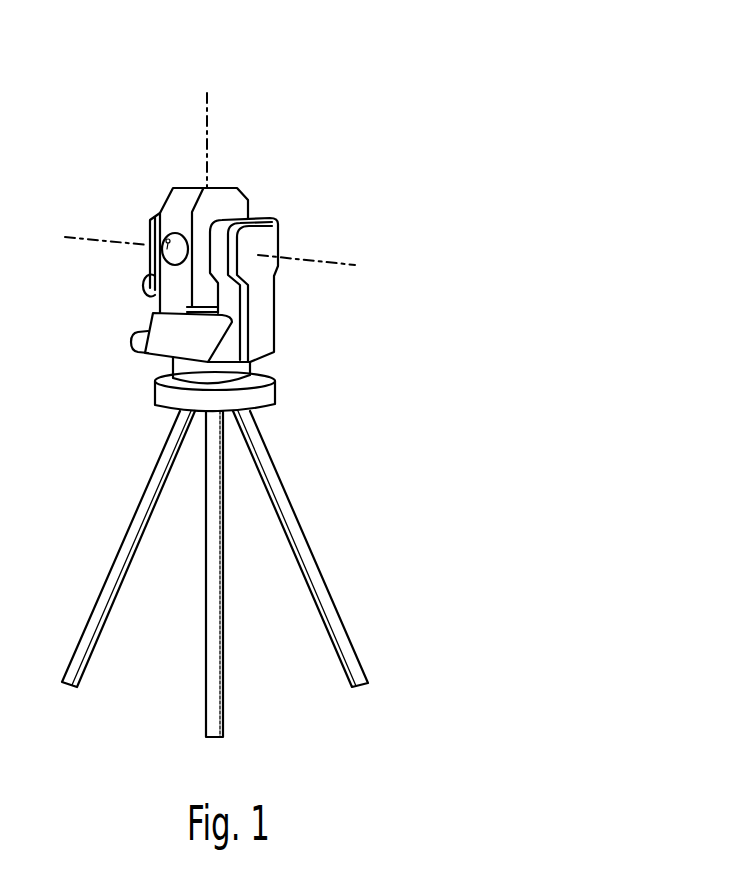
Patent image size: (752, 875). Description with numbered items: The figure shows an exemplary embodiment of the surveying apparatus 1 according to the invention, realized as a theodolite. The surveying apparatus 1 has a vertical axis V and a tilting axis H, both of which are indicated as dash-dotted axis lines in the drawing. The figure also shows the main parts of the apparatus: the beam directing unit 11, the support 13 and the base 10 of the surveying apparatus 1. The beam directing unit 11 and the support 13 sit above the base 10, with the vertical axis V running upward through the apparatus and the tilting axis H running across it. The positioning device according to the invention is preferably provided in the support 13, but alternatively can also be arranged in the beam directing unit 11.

The surveying apparatus 1 is at (348, 91).
The base 10 is at (158, 398).
The beam directing unit 11 is at (178, 202).
The support 13 is at (267, 310).
The vertical axis V is at (207, 113).
The tilting axis H is at (333, 263).